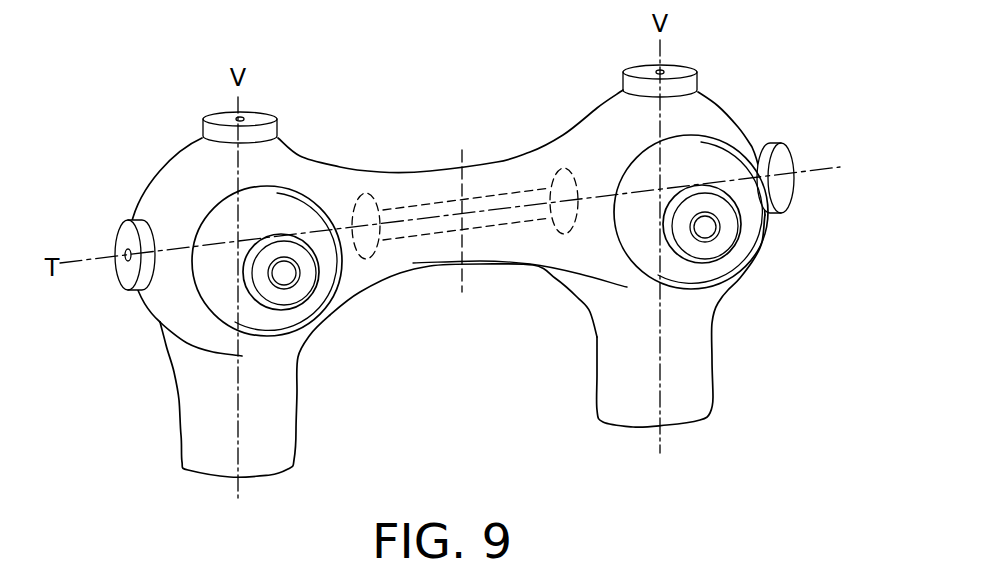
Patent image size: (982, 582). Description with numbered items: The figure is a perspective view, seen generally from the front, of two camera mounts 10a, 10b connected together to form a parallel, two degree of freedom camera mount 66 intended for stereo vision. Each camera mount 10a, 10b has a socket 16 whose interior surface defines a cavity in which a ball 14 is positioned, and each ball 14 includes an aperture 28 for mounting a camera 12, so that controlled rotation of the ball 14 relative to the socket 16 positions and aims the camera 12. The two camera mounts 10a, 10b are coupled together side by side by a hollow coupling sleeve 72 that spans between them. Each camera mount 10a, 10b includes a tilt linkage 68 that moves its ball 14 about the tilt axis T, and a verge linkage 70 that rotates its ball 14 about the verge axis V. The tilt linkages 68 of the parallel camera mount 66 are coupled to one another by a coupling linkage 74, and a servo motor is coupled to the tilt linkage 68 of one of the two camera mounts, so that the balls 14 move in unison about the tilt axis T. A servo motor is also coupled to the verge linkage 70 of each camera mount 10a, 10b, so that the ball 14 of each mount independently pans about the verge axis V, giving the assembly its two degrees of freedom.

The parallel two degree of freedom camera mount 66 is at (462, 248).
The camera mount 10a is at (180, 160).
The camera mount 10b is at (603, 113).
The camera 12 is at (290, 295).
The ball 14 is at (263, 317).
The socket 16 is at (292, 162).
The aperture 28 is at (697, 193).
The tilt linkage 68 is at (116, 243).
The verge linkage 70 is at (258, 117).
The hollow coupling sleeve 72 is at (463, 158).
The coupling linkage 74 is at (463, 292).